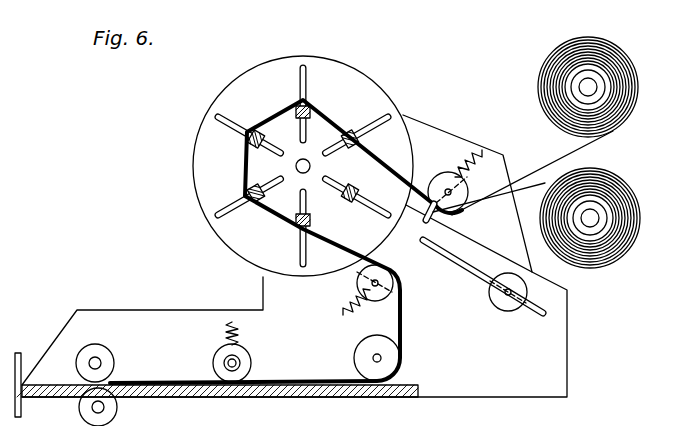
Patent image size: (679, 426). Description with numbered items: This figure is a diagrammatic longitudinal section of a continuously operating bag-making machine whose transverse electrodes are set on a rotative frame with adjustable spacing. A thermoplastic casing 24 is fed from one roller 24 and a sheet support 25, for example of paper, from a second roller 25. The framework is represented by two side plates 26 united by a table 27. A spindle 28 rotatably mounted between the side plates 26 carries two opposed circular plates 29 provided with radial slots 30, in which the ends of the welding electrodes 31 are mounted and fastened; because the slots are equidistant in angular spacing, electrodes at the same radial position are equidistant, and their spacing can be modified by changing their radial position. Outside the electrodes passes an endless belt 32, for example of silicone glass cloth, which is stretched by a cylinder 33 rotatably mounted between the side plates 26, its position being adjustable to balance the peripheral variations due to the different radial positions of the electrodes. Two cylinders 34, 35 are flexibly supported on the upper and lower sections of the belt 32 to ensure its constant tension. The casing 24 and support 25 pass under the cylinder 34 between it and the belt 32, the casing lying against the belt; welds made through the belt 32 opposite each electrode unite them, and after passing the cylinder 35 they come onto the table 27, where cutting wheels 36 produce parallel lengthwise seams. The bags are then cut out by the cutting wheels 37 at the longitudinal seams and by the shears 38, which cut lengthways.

The roller 24 is at (622, 176).
The roller 25 is at (547, 63).
The side plates 26 is at (560, 340).
The table 27 is at (414, 384).
The spindle 28 is at (310, 165).
The circular plates 29 is at (197, 172).
The radial slots 30 is at (223, 115).
The welding electrodes 31 is at (311, 213).
The endless belt 32 is at (452, 293).
The cylinder 33 is at (507, 306).
The cylinder 34 is at (438, 172).
The cylinder 35 is at (357, 281).
The cutting wheels 36 is at (250, 367).
The cutting wheels 37 is at (112, 365).
The shears 38 is at (22, 356).